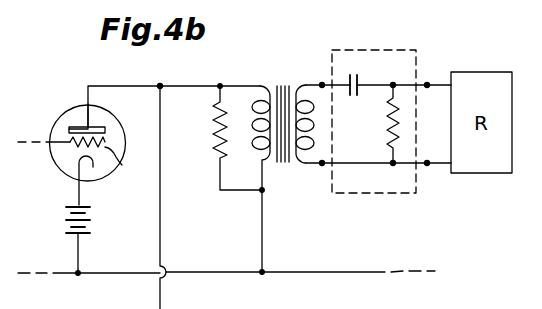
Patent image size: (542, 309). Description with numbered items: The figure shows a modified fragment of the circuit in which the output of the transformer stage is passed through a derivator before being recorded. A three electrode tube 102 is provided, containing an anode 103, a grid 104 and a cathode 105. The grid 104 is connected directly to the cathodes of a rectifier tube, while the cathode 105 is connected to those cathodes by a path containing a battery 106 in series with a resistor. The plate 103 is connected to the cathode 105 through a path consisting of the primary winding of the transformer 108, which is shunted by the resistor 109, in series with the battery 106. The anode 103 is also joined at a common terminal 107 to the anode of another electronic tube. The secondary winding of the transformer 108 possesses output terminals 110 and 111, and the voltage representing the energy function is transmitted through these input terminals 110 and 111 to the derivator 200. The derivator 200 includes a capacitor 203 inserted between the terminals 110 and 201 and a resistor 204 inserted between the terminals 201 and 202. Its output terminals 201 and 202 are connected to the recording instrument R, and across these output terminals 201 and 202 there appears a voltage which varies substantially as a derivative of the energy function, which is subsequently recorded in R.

The three electrode tube 102 is at (102, 117).
The anode 103 is at (73, 125).
The grid 104 is at (128, 163).
The cathode 105 is at (86, 164).
The battery 106 is at (97, 220).
The common terminal 107 is at (162, 187).
The transformer 108 is at (283, 126).
The resistor 109 is at (219, 138).
The output terminal 110 is at (328, 77).
The output terminal 111 is at (349, 175).
The derivator 200 is at (356, 56).
The output terminal 201 is at (438, 74).
The output terminal 202 is at (422, 176).
The capacitor 203 is at (388, 78).
The resistor 204 is at (373, 125).